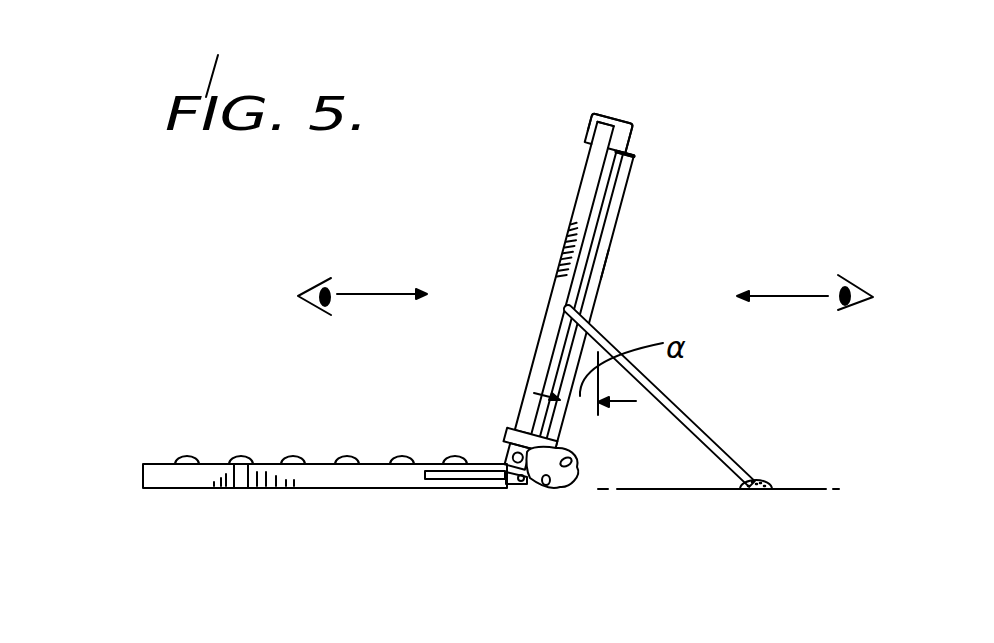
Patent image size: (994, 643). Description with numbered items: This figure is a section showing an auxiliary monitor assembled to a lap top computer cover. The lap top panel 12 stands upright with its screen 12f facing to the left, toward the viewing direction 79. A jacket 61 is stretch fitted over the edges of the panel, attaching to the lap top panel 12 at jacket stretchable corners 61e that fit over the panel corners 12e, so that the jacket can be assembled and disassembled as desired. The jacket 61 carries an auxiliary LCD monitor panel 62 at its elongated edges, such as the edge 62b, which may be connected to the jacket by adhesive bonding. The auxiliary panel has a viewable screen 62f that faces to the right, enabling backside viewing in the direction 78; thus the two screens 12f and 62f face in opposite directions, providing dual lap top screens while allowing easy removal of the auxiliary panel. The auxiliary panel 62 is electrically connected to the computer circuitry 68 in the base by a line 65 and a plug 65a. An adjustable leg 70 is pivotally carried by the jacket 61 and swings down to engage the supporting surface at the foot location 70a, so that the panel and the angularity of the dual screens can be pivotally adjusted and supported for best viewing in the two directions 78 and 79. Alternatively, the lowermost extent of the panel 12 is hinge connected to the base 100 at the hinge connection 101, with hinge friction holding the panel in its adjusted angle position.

The lap top panel 12 is at (568, 214).
The panel corners 12e is at (604, 133).
The screen 12f is at (562, 267).
The jacket 61 is at (641, 110).
The stretchable corners 61e is at (610, 115).
The auxiliary LCD monitor panel 62 is at (626, 211).
The elongated edge 62b is at (636, 157).
The viewable screen 62f is at (608, 256).
The line 65 is at (577, 488).
The plug 65a is at (516, 478).
The computer circuitry 68 is at (458, 480).
The adjustable leg 70 is at (713, 428).
The foot location 70a is at (753, 490).
The backside viewing direction 78 is at (802, 297).
The viewing direction 79 is at (363, 294).
The base 100 is at (200, 483).
The hinge connection 101 is at (506, 452).